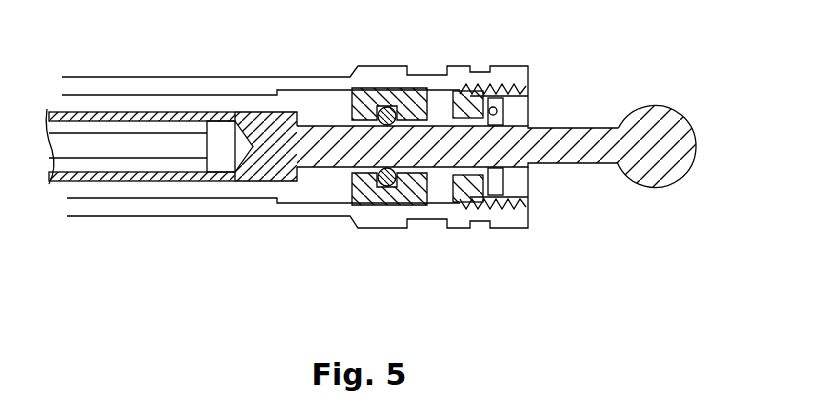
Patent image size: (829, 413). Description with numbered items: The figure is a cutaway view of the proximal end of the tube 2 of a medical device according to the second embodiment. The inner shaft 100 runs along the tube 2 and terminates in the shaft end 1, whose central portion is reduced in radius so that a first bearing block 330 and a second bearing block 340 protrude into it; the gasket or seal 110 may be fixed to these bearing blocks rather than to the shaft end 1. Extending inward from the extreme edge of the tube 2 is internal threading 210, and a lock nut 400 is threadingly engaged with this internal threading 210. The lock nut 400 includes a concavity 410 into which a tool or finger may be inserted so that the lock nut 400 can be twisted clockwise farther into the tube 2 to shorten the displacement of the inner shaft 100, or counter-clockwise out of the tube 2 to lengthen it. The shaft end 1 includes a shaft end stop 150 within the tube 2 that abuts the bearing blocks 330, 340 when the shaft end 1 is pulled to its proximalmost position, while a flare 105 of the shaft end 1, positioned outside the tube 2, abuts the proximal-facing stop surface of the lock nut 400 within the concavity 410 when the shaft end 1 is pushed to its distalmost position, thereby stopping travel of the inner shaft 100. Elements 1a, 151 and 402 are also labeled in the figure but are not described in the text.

The shaft end 1 is at (590, 163).
The ball end of rod 1a is at (704, 150).
The tube 2 is at (397, 66).
The inner shaft 100 is at (113, 148).
The flare 105 is at (497, 114).
The seal 110 is at (387, 186).
The shaft end stop 150 is at (300, 112).
The collar / flange of rod 151 is at (504, 112).
The internal threading 210 is at (497, 86).
The first bearing block 330 is at (353, 90).
The second bearing block 340 is at (353, 182).
The lock nut 400 is at (462, 178).
The lock nut 402 is at (507, 93).
The concavity 410 is at (508, 190).